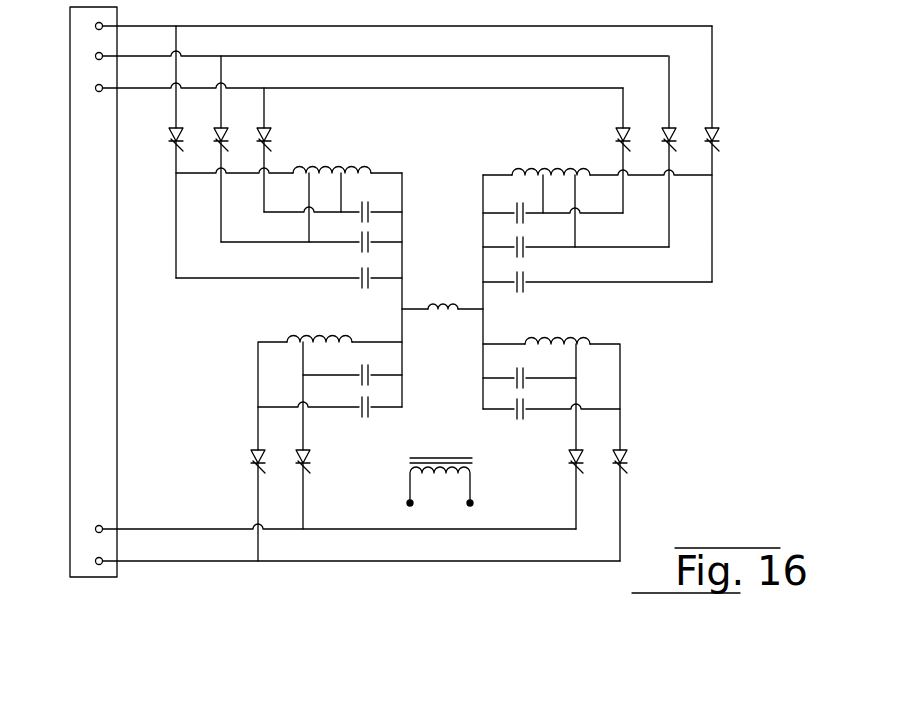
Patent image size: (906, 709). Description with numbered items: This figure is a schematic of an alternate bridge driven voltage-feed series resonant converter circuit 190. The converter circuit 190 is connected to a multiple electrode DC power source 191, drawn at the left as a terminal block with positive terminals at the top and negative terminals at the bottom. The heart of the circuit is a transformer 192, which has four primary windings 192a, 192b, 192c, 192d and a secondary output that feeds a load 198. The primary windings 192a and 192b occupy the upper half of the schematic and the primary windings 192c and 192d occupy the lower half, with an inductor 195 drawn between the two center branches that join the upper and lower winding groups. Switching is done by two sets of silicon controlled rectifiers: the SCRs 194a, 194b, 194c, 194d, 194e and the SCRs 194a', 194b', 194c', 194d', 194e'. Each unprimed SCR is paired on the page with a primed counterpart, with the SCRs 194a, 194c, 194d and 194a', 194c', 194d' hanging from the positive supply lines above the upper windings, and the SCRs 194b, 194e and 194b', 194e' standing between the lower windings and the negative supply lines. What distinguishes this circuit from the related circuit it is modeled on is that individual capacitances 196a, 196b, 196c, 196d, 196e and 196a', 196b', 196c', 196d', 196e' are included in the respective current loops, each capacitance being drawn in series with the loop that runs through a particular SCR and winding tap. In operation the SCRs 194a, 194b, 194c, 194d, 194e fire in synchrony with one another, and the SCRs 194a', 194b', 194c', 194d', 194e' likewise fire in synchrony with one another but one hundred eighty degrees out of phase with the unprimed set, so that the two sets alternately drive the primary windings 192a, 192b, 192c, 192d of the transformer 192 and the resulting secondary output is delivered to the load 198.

The bridge driven series resonant converter circuit 190 is at (676, 352).
The multiple electrode DC power source 191 is at (70, 335).
The transformer 192 is at (474, 460).
The primary winding 192a is at (345, 170).
The primary winding 192b is at (545, 172).
The primary winding 192c is at (300, 340).
The primary winding 192d is at (598, 342).
The SCR 194a is at (150, 128).
The SCR 194b is at (651, 449).
The SCR 194c is at (250, 109).
The SCR 194d is at (287, 128).
The SCR 194e is at (544, 449).
The SCR 194a' is at (747, 129).
The SCR 194b' is at (221, 463).
The SCR 194c' is at (725, 110).
The SCR 194d' is at (587, 129).
The SCR 194e' is at (334, 463).
The inductor 195 is at (441, 303).
The capacitance 196a is at (329, 290).
The capacitance 196b is at (329, 254).
The capacitance 196c is at (311, 221).
The capacitance 196d is at (469, 378).
The capacitance 196e is at (469, 409).
The capacitance 196a' is at (560, 292).
The capacitance 196b' is at (560, 256).
The capacitance 196c' is at (574, 222).
The capacitance 196d' is at (411, 361).
The capacitance 196e' is at (394, 420).
The load 198 is at (470, 505).